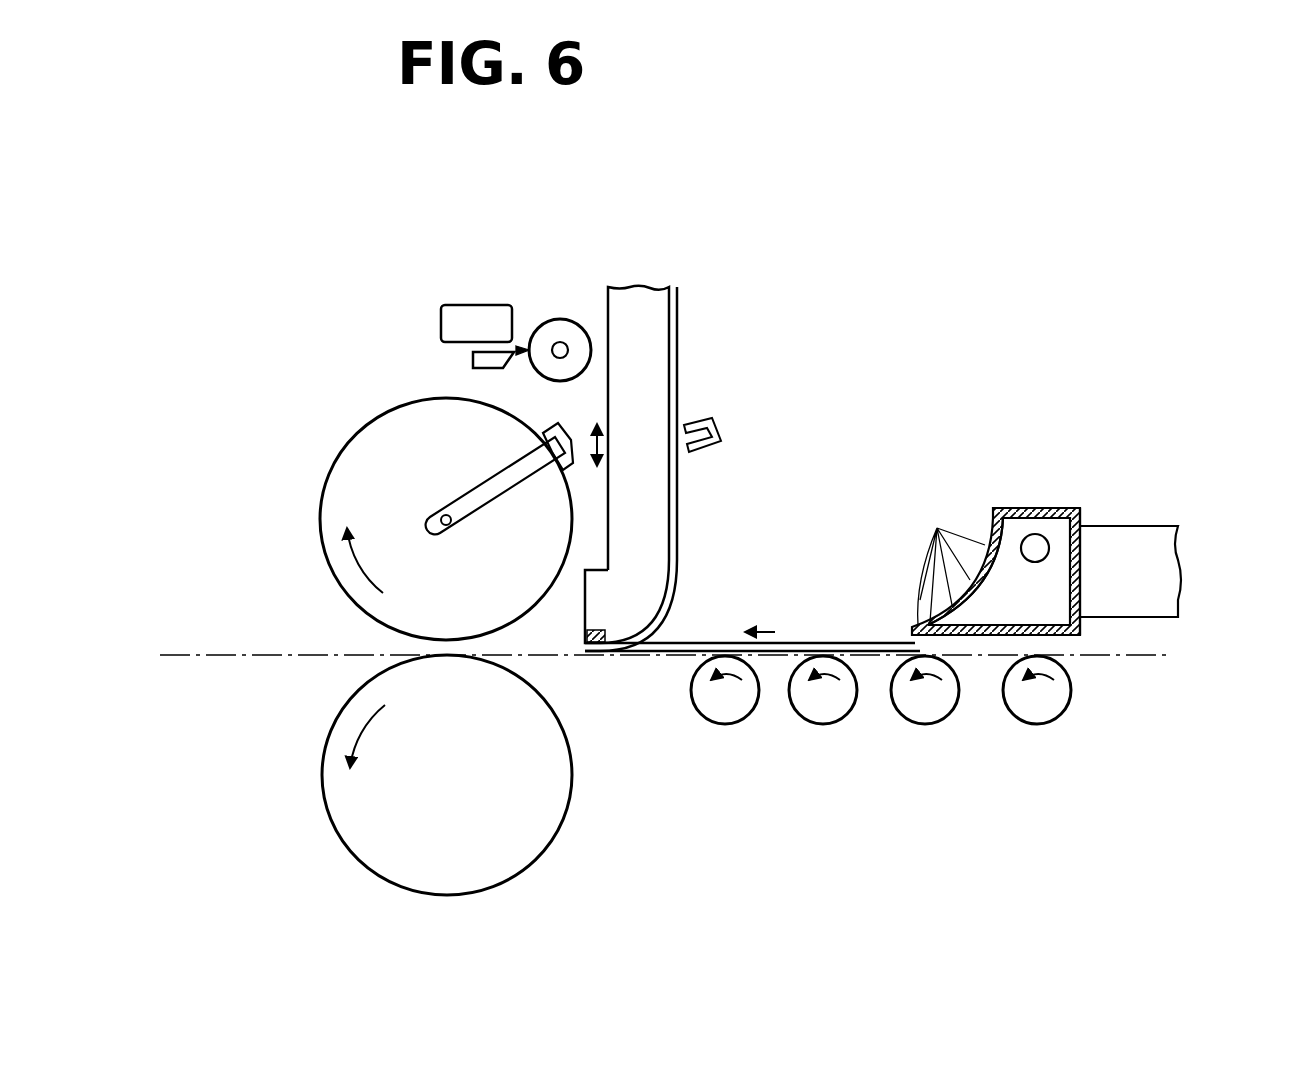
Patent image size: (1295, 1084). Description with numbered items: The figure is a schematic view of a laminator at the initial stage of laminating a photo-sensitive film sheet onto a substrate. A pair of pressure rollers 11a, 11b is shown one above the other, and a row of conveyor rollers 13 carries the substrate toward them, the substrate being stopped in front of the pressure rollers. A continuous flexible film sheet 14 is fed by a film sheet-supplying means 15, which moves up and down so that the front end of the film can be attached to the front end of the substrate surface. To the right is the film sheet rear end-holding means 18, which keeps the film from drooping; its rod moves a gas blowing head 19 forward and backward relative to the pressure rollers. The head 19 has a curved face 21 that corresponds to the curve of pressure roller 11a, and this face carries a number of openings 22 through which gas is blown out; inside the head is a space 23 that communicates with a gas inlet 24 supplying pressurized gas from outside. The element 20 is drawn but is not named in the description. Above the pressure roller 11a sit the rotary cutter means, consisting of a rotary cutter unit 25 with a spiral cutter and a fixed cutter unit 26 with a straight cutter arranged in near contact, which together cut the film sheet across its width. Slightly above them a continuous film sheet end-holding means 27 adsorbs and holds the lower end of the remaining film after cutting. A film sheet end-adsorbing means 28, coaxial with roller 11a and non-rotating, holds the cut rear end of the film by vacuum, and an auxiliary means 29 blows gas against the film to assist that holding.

The pressure roller 11a is at (325, 482).
The pressure roller 11b is at (322, 800).
The conveyor rollers 13 is at (725, 720).
The continuous flexible film sheet 14 is at (679, 356).
The film sheet-supplying means 15 is at (640, 287).
The film sheet rear end-holding means 18 is at (1172, 488).
The gas blowing head 19 is at (1040, 508).
The belt conveyor 20 is at (1165, 603).
The curved face 21 is at (985, 535).
The openings 22 is at (937, 528).
The space 23 is at (1062, 508).
The gas inlet 24 is at (1028, 538).
The rotary cutter unit 25 is at (561, 318).
The fixed cutter unit 26 is at (473, 360).
The continuous film sheet end-holding means 27 is at (441, 324).
The film sheet end-adsorbing means 28 is at (549, 430).
The auxiliary means 29 is at (718, 427).